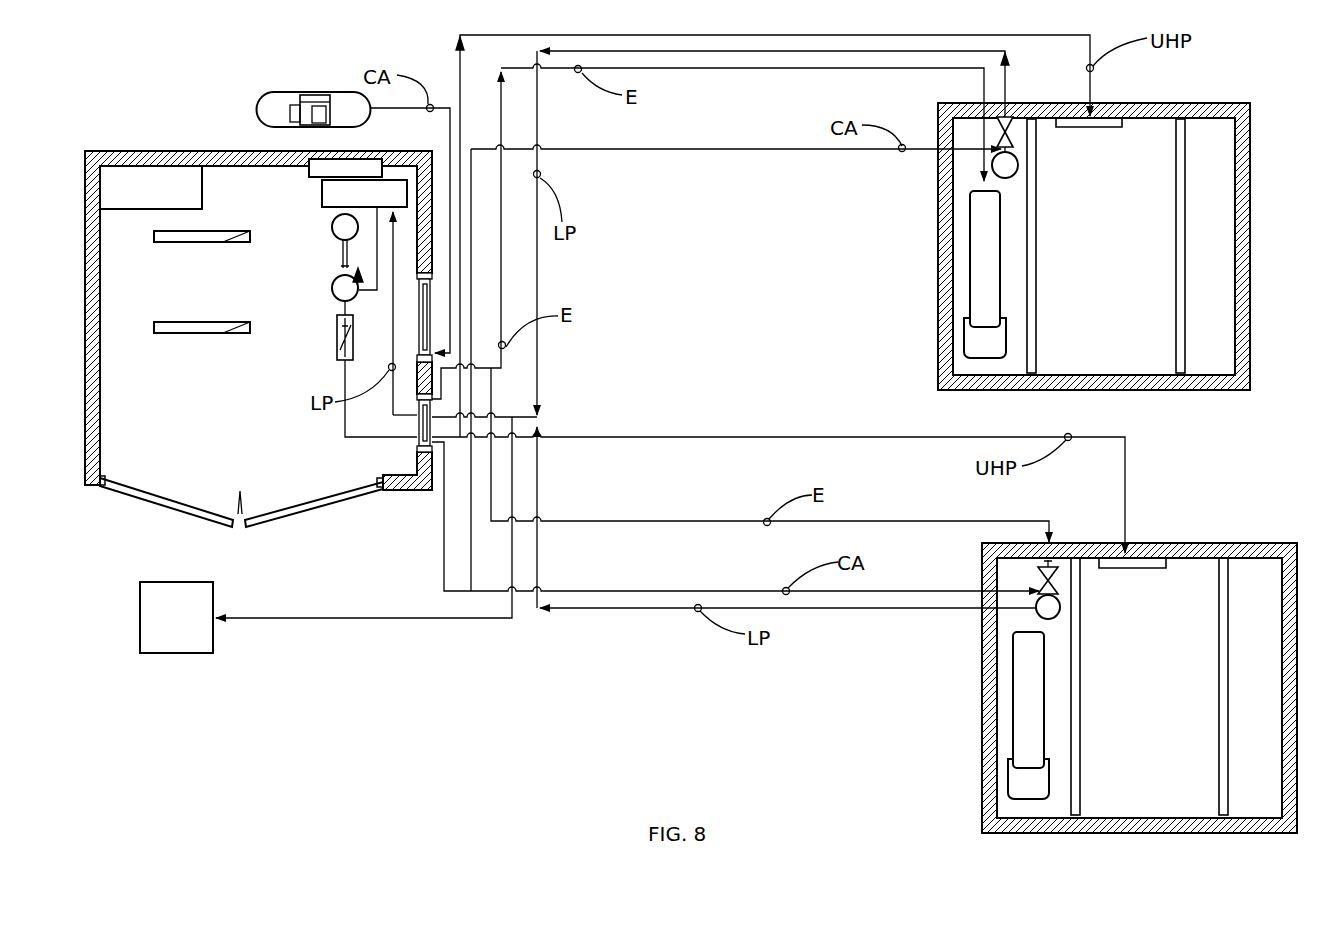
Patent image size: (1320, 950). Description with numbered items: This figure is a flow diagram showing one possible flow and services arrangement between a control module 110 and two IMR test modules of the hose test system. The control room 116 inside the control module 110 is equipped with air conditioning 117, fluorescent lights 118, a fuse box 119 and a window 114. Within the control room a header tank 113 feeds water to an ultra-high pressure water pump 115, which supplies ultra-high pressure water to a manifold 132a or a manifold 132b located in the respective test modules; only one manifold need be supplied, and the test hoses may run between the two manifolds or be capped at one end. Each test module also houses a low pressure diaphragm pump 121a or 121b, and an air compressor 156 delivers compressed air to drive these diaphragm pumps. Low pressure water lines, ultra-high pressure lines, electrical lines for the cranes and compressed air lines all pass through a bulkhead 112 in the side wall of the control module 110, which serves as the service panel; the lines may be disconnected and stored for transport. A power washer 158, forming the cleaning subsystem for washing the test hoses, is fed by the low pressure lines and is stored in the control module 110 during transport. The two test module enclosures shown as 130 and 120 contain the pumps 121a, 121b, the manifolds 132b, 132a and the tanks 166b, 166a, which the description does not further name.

The control module 110 is at (317, 518).
The bulkhead 112 is at (428, 424).
The header tank 113 is at (327, 192).
The window 114 is at (429, 316).
The UHP water pump 115 is at (333, 287).
The control room 116 is at (200, 478).
The air conditioning 117 is at (160, 181).
The fluorescent lights 118 is at (225, 322).
The fuse box 119 is at (347, 168).
The cabinet a 120 is at (958, 800).
The low pressure diaphragm pump 121a is at (1045, 612).
The low pressure diaphragm pump 121b is at (1016, 165).
The cabinet b 130 is at (918, 370).
The manifold 132a is at (1147, 563).
The manifold 132b is at (1110, 120).
The air compressor 156 is at (298, 94).
The power washer 158 is at (143, 610).
The canister a 166a is at (1010, 783).
The canister b 166b is at (968, 342).